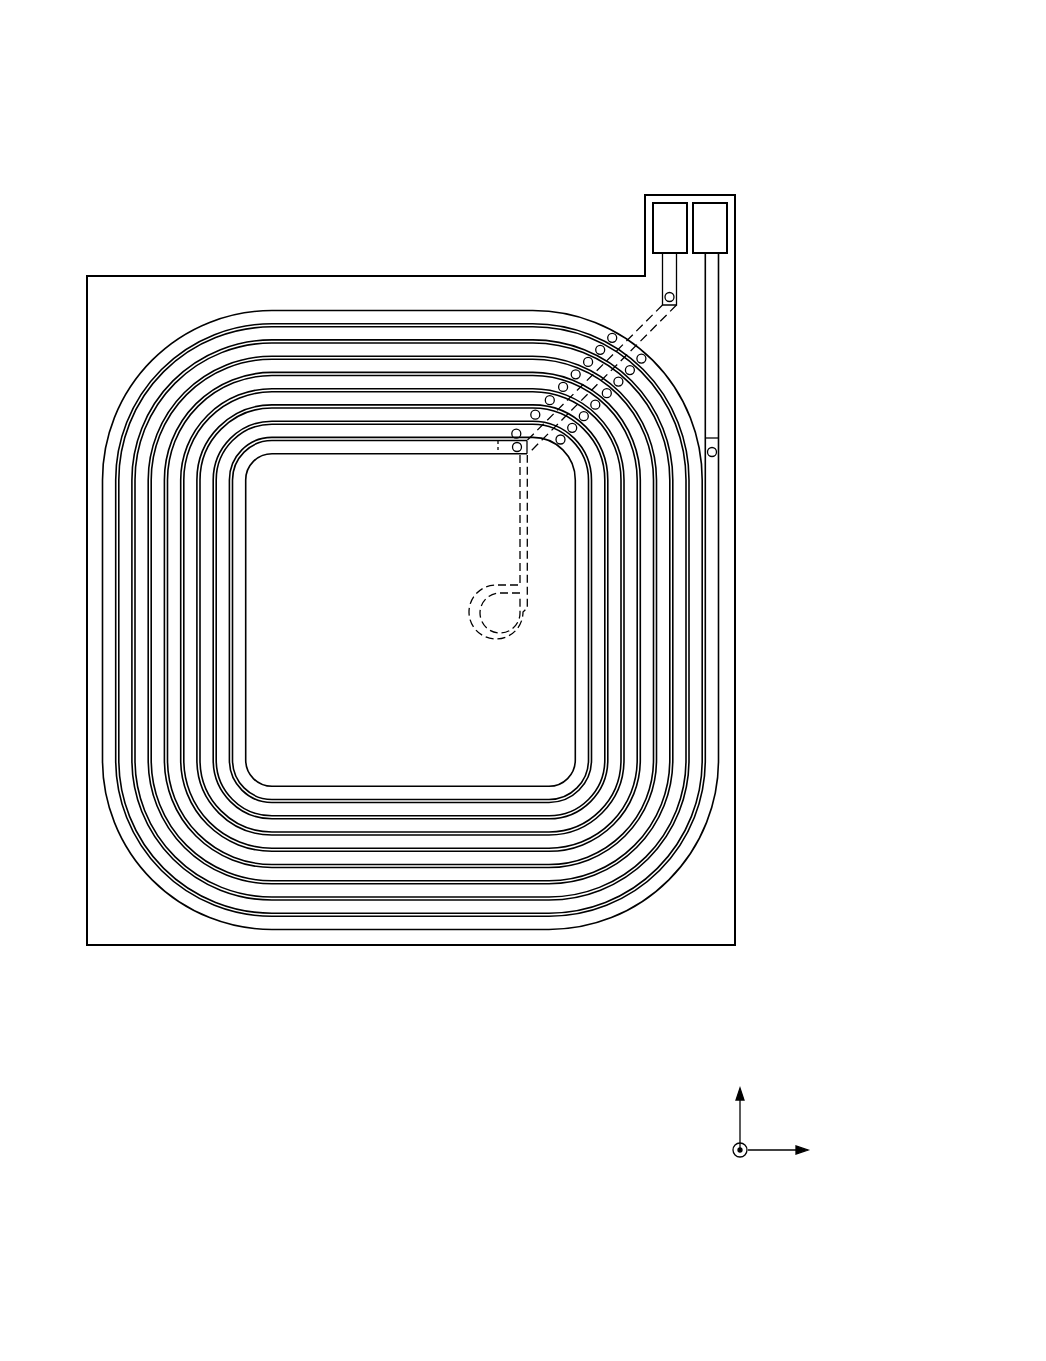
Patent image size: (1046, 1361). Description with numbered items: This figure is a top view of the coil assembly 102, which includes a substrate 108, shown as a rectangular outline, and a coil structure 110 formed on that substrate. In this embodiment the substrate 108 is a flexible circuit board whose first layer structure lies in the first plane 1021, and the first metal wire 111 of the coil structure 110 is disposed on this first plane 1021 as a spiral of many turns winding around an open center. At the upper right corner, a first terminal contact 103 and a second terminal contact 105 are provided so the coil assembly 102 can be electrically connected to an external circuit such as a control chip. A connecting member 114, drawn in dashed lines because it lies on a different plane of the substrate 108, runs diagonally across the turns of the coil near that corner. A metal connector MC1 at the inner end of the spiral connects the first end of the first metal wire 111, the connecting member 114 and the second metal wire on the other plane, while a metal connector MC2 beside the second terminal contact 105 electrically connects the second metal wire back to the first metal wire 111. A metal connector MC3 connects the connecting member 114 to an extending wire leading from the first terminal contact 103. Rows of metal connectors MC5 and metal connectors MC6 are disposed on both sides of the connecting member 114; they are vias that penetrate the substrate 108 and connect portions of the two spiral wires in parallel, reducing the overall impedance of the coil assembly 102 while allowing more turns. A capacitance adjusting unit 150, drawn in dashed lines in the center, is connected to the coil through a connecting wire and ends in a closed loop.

The coil assembly 102 is at (72, 31).
The first plane 1021 is at (722, 838).
The substrate 108 is at (136, 270).
The first terminal contact 103 is at (670, 203).
The second terminal contact 105 is at (712, 203).
The coil structure 110 is at (494, 591).
The first metal wire 111 is at (734, 603).
The connecting member 114 is at (668, 322).
The capacitance adjusting unit 150 is at (450, 601).
The metal connector MC1 is at (516, 453).
The metal connector MC2 is at (716, 452).
The metal connector MC3 is at (661, 295).
The metal connectors MC5 is at (609, 335).
The metal connectors MC6 is at (634, 368).